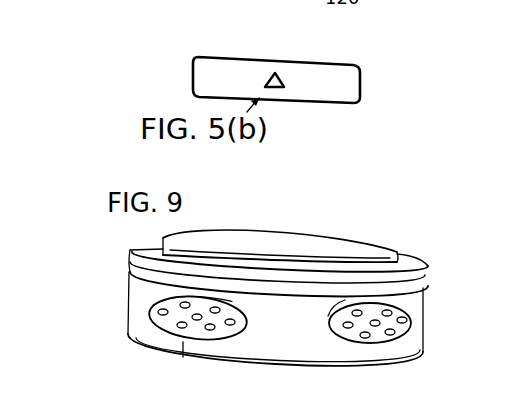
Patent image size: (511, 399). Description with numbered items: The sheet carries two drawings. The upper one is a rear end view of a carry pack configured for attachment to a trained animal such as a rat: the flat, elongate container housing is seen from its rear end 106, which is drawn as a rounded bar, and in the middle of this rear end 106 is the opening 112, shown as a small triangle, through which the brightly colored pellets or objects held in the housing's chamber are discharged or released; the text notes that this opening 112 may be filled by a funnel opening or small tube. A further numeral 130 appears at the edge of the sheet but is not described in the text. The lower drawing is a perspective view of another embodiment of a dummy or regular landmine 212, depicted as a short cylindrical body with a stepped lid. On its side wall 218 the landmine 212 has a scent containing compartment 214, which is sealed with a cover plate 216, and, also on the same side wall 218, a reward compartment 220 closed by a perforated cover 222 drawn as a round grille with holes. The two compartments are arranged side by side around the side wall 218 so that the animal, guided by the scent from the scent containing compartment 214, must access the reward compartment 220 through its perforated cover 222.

In FIG. 5b, the rear end 106 is at (337, 90).
In FIG. 5b, the opening 112 is at (279, 71).
In FIG. 5b, the element 130 is at (497, 74).
In FIG. 9, the landmine 212 is at (424, 294).
In FIG. 9, the scent containing compartment 214 is at (182, 357).
In FIG. 9, the cover plate 216 is at (152, 321).
In FIG. 9, the side wall 218 is at (420, 309).
In FIG. 9, the reward compartment 220 is at (407, 330).
In FIG. 9, the perforated cover 222 is at (393, 336).